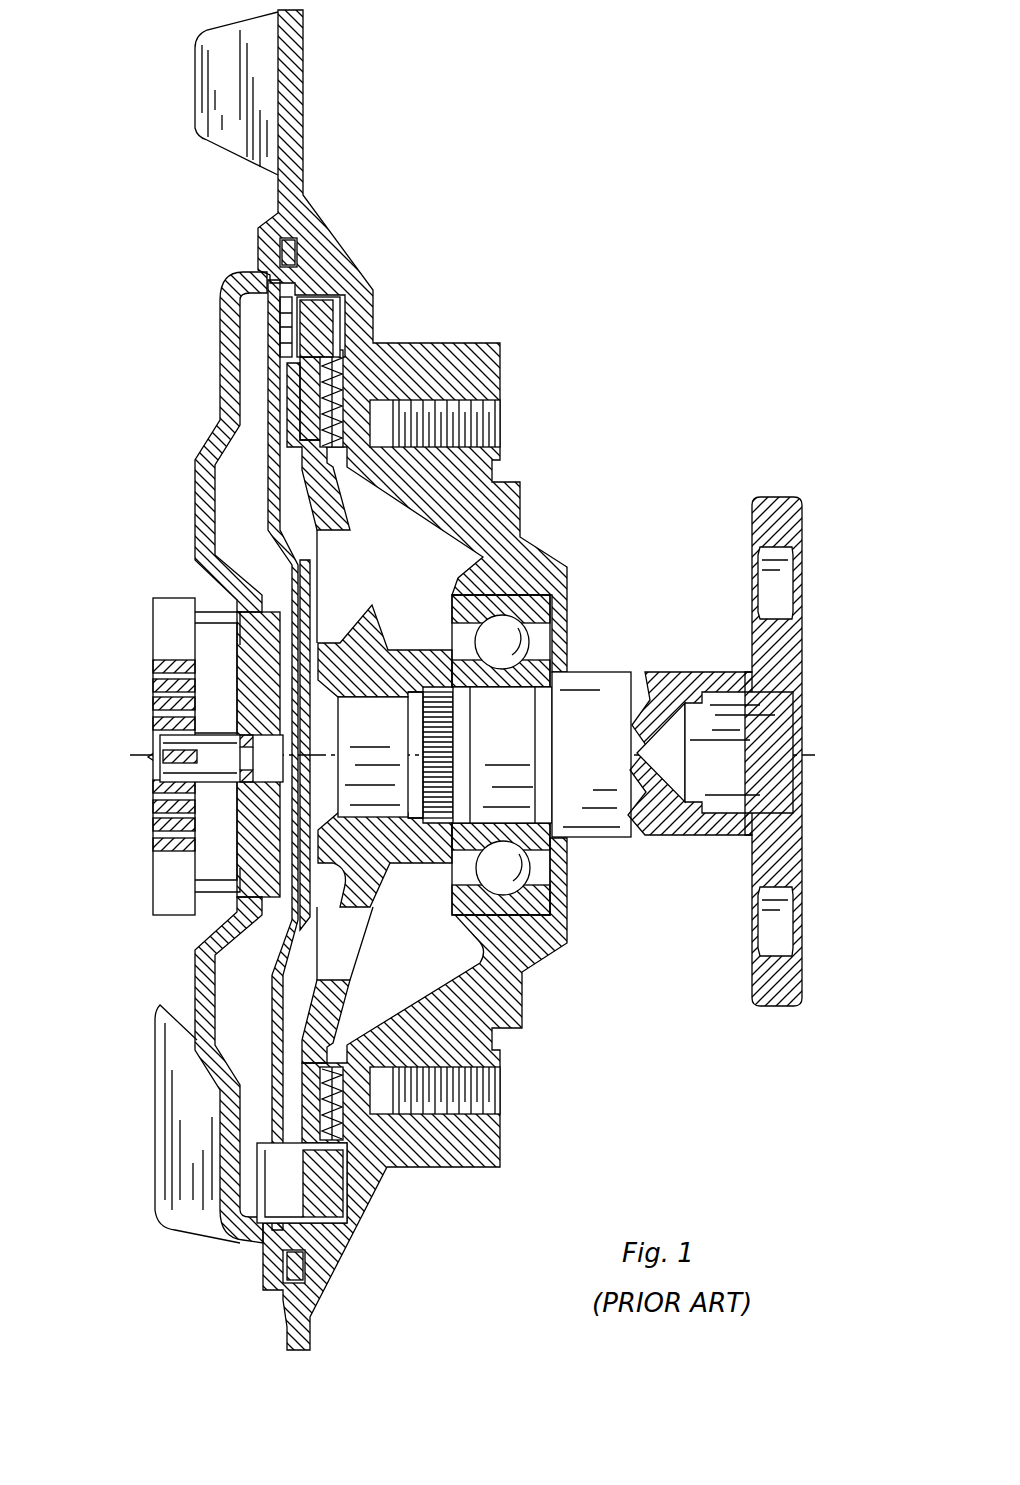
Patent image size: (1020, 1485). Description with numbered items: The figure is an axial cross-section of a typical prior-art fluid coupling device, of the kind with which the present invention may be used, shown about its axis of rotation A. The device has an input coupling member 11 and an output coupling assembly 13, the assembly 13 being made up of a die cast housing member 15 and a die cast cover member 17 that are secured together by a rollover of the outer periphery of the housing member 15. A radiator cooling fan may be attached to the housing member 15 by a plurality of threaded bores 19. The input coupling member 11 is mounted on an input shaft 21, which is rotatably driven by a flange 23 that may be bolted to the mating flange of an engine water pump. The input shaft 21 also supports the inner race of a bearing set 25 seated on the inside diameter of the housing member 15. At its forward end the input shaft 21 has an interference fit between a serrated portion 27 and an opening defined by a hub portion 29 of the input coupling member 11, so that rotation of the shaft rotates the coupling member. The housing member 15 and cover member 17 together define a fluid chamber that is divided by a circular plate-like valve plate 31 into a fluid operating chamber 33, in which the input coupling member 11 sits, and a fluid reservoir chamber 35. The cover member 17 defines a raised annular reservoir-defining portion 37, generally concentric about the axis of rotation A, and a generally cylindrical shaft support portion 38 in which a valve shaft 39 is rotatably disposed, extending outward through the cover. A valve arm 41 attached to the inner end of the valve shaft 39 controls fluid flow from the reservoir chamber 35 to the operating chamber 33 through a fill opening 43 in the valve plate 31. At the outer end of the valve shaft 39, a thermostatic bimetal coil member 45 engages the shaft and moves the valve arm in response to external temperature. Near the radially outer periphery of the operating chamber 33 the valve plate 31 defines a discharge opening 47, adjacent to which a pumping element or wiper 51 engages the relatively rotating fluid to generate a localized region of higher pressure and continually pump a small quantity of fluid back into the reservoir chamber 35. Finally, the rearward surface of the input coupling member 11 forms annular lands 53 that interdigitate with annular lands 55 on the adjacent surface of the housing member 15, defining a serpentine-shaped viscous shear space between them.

The input coupling member 11 is at (337, 640).
The output coupling assembly 13 is at (370, 215).
The housing member 15 is at (493, 362).
The cover member 17 is at (225, 420).
The threaded bores 19 is at (475, 418).
The input shaft 21 is at (648, 672).
The flange 23 is at (752, 972).
The bearing set 25 is at (537, 872).
The serrated portion 27 is at (443, 718).
The hub portion 29 is at (393, 843).
The valve plate 31 is at (298, 563).
The fluid operating chamber 33 is at (428, 950).
The fluid reservoir chamber 35 is at (240, 980).
The reservoir-defining portion 37 is at (207, 1027).
The shaft support portion 38 is at (153, 723).
The valve shaft 39 is at (165, 768).
The valve arm 41 is at (263, 488).
The fill opening 43 is at (268, 447).
The thermostatic bimetal coil member 45 is at (157, 692).
The discharge opening 47 is at (270, 332).
The pumping element 51 is at (298, 325).
The annular lands 53 is at (353, 1133).
The annular lands 55 is at (257, 1240).
The axis of rotation A is at (112, 748).